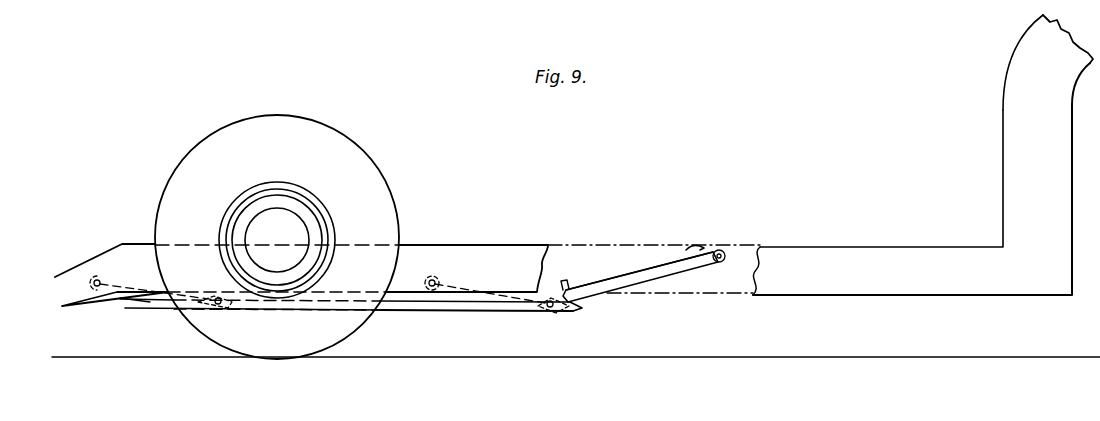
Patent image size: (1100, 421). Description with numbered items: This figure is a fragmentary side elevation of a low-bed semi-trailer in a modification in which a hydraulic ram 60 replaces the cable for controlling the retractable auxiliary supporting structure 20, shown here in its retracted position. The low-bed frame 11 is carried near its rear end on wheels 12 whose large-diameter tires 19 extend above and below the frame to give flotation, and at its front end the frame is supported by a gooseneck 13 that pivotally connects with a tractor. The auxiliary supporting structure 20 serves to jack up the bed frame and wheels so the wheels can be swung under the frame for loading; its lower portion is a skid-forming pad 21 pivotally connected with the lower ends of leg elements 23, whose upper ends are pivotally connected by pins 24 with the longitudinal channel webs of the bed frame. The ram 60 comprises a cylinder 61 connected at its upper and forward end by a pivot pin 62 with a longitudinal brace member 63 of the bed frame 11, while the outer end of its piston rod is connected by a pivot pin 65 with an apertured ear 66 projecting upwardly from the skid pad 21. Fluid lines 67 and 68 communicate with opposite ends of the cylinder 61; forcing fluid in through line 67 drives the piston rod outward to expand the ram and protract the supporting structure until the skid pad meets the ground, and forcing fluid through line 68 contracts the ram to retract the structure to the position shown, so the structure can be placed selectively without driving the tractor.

The low-bed frame 11 is at (863, 247).
The wheels 12 is at (168, 173).
The gooseneck 13 is at (1017, 67).
The tires 19 is at (363, 158).
The retractable supporting structure 20 is at (128, 295).
The skid-forming pad 21 is at (418, 313).
The leg elements 23 is at (148, 301).
The pins 24 is at (96, 278).
The hydraulic ram 60 is at (691, 276).
The cylinder 61 is at (642, 270).
The pivot pin 62 is at (721, 249).
The longitudinal brace member 63 is at (770, 257).
The pivot pin 65 is at (555, 309).
The apertured ear 66 is at (218, 306).
The fluid line 67 is at (686, 249).
The fluid line 68 is at (570, 282).